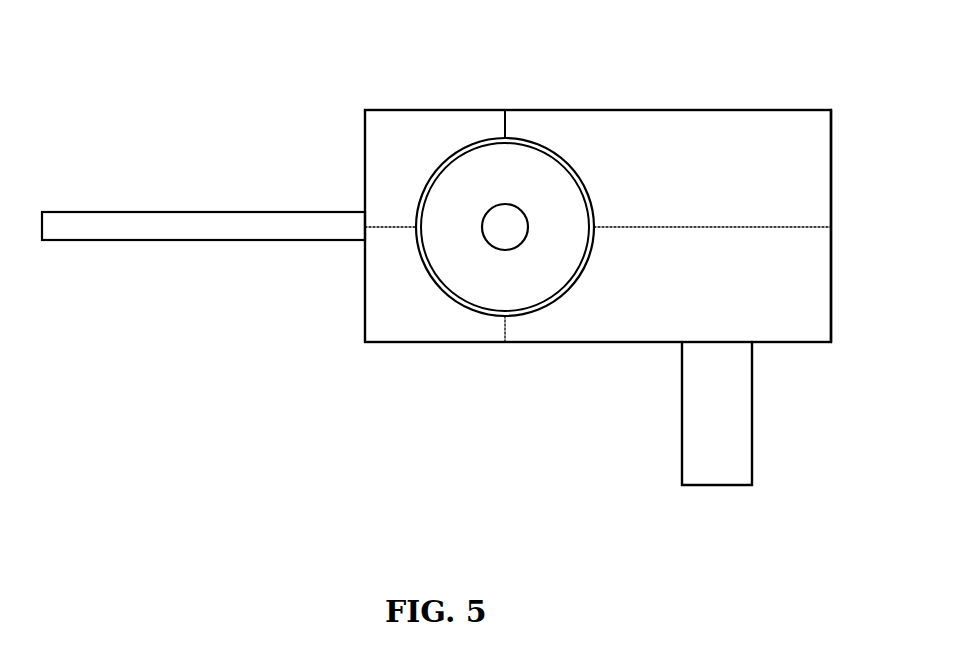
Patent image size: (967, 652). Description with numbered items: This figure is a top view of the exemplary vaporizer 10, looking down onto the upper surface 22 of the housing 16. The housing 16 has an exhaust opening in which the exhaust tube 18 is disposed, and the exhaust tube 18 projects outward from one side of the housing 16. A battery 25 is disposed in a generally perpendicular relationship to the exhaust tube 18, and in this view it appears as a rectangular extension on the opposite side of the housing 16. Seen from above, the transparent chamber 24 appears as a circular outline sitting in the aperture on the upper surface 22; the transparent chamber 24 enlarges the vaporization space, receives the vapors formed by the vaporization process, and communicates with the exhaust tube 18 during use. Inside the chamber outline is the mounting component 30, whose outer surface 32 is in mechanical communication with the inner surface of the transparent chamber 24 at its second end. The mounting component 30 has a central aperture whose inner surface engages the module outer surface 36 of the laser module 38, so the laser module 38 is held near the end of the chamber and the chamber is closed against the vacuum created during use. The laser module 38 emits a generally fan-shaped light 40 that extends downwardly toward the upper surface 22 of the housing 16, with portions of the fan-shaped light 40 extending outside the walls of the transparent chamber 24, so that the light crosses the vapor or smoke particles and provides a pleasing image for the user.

The vaporizer 10 is at (769, 134).
The housing 16 is at (822, 312).
The exhaust tube 18 is at (283, 230).
The upper surface 22 is at (818, 172).
The transparent chamber 24 is at (553, 308).
The battery 25 is at (692, 455).
The mounting component 30 is at (472, 305).
The outer surface 32 is at (562, 158).
The module outer surface 36 is at (492, 251).
The laser module 38 is at (484, 217).
The fan-shaped light 40 is at (380, 225).